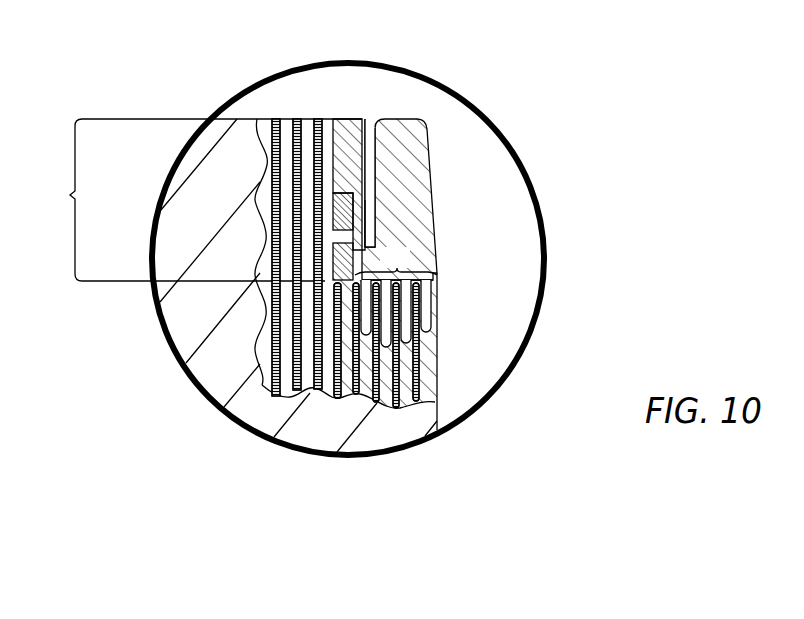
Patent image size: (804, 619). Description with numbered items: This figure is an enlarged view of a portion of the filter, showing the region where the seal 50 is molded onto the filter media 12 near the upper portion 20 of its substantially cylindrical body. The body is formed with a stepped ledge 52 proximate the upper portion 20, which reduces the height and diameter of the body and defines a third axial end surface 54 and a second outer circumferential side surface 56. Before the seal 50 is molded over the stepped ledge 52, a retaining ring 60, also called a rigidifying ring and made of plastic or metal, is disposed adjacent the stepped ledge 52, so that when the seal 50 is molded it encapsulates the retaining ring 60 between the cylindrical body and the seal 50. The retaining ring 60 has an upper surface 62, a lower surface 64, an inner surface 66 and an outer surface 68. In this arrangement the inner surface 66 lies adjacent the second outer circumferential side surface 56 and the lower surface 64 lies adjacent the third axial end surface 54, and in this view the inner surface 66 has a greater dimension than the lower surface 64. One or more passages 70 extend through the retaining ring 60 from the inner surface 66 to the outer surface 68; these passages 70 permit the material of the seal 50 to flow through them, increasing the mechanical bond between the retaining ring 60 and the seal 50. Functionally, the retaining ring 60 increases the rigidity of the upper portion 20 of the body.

The filter media 12 is at (213, 364).
The upper portion 20 is at (452, 273).
The seal 50 is at (442, 150).
The stepped ledge 52 is at (366, 97).
The third axial end surface 54 is at (396, 259).
The second outer circumferential side surface 56 is at (203, 257).
The retaining ring 60 is at (365, 207).
The upper surface 62 is at (343, 193).
The lower surface 64 is at (347, 285).
The inner surface 66 is at (353, 205).
The outer surface 68 is at (363, 257).
The passages 70 is at (347, 237).